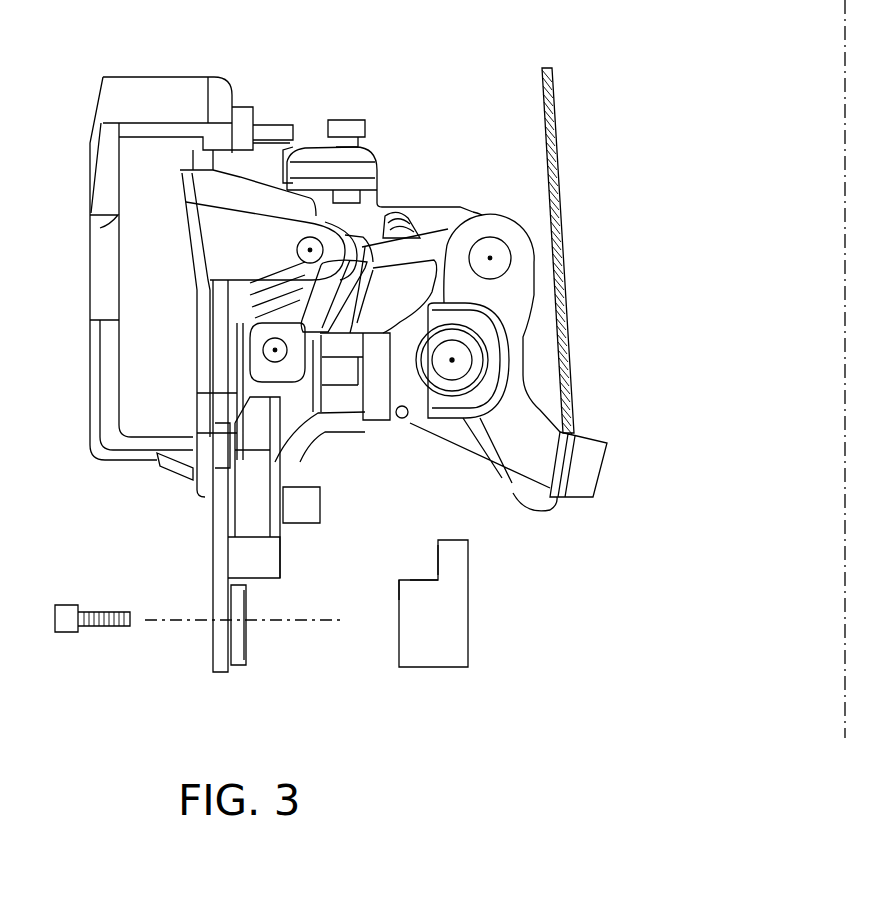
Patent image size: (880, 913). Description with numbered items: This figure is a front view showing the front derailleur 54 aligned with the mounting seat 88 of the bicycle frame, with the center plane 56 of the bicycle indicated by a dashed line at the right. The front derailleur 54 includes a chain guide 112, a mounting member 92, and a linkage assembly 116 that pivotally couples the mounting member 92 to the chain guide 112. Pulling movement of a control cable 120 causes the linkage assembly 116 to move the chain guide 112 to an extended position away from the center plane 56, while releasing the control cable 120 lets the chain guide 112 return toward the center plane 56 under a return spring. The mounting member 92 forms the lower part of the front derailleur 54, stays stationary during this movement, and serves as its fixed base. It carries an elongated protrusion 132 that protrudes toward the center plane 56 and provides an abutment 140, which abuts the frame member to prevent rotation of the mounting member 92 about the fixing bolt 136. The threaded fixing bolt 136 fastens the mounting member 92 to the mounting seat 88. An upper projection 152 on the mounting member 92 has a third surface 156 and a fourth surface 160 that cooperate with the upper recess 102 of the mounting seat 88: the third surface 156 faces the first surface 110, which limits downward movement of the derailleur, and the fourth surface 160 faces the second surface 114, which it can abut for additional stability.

The chain guide 112 is at (130, 90).
The linkage assembly 116 is at (400, 157).
The control cable 120 is at (555, 127).
The center plane 56 is at (845, 143).
The front derailleur 54 is at (625, 303).
The upper recess 102 is at (413, 547).
The first surface 110 is at (407, 577).
The second surface 114 is at (428, 560).
The mounting seat 88 is at (468, 568).
The upper projection 152 is at (253, 562).
The fourth surface 160 is at (280, 555).
The third surface 156 is at (297, 578).
The abutment 140 is at (242, 628).
The mounting member 92 is at (220, 648).
The elongated protrusion 132 is at (301, 655).
The fixing bolt 136 is at (72, 618).